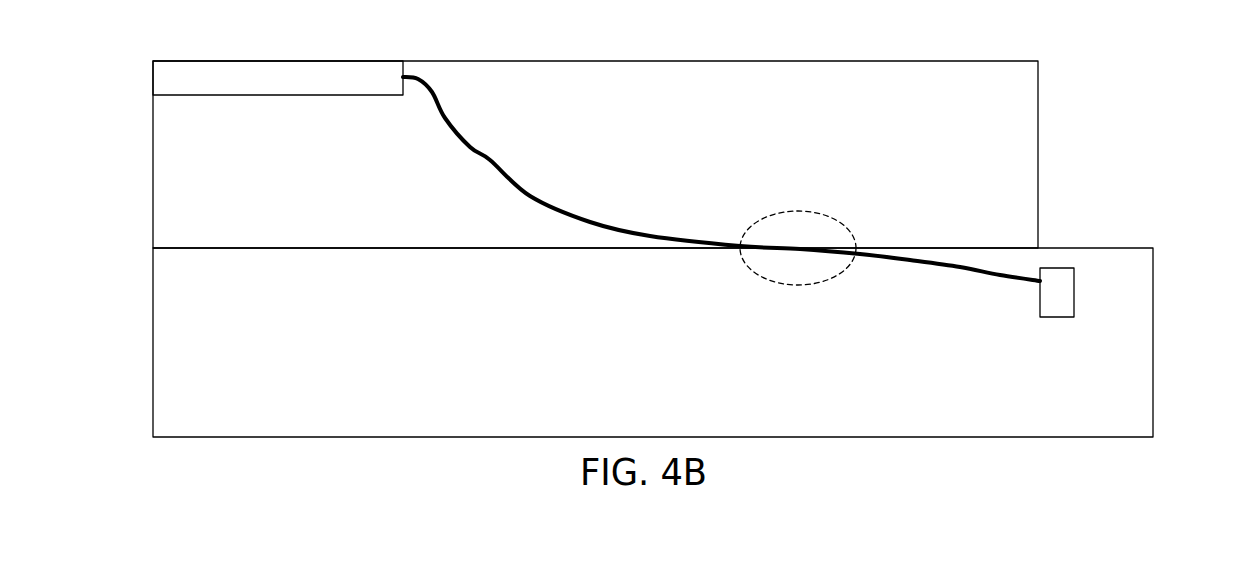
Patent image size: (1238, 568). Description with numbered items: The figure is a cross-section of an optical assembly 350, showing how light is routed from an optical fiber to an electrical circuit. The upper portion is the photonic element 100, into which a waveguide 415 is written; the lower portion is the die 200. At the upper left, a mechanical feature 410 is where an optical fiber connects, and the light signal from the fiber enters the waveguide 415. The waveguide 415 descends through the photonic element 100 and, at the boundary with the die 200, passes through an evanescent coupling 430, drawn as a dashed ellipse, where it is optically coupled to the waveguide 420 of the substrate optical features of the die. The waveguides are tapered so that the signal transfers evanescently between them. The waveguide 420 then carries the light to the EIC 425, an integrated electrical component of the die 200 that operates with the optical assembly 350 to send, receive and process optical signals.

The optical assembly 350 is at (1027, 61).
The photonic element 100 is at (971, 145).
The die 200 is at (283, 390).
The mechanical feature 410 is at (288, 88).
The waveguide 415 is at (488, 158).
The waveguide 420 is at (960, 268).
The EIC 425 is at (1057, 317).
The evanescent coupling 430 is at (808, 212).